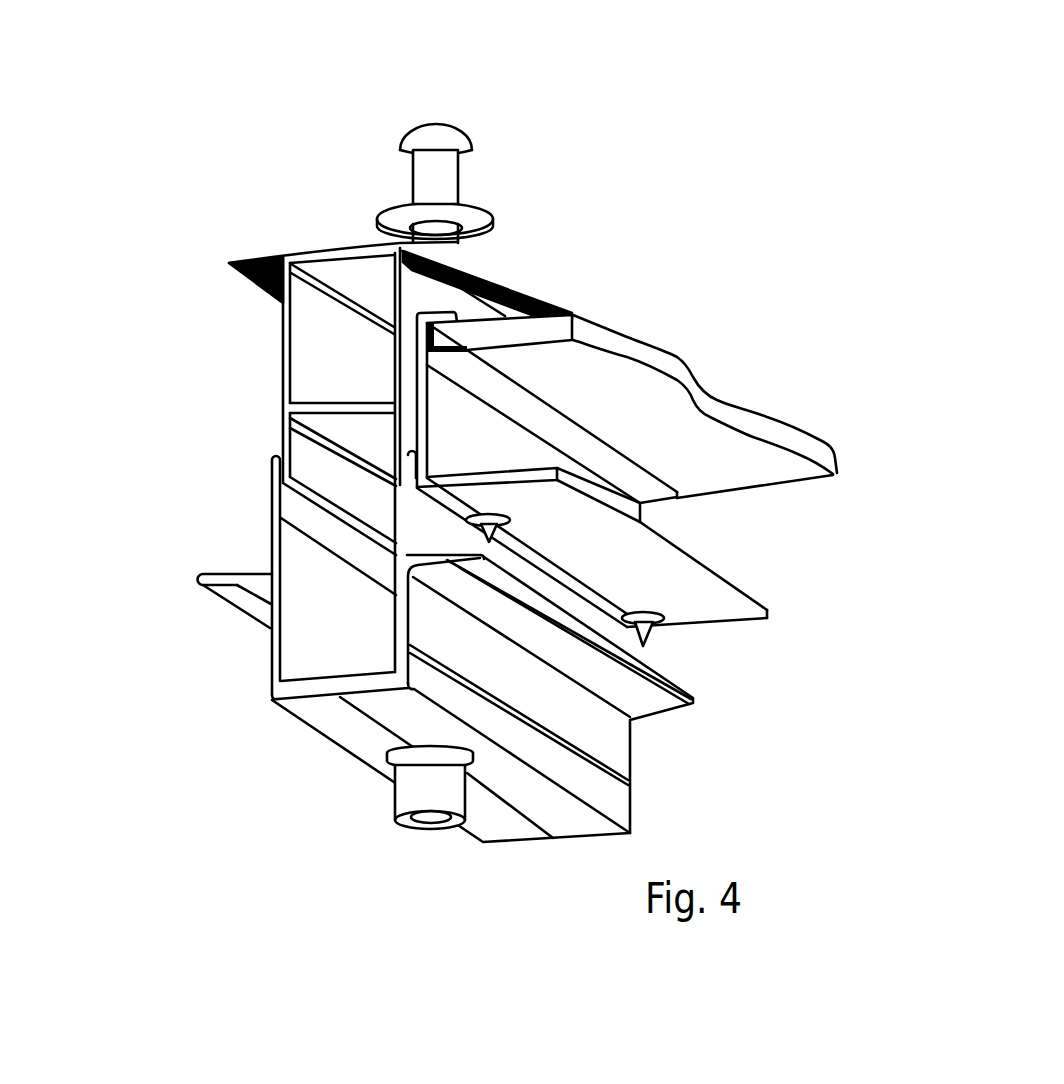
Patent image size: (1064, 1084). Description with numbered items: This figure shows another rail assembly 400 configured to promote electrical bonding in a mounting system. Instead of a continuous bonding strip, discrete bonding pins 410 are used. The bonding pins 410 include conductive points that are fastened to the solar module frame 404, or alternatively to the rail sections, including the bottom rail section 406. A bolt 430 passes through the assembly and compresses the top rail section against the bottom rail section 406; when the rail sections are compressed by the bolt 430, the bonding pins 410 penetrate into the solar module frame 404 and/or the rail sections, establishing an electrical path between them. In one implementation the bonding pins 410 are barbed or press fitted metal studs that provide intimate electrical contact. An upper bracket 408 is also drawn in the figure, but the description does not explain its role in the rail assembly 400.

The rail assembly 400 is at (577, 454).
The solar module frame 404 is at (660, 517).
The bottom rail section 406 is at (252, 691).
The upper channel bracket 408 is at (265, 328).
The bonding pins 410 is at (482, 527).
The bolt 430 is at (431, 128).